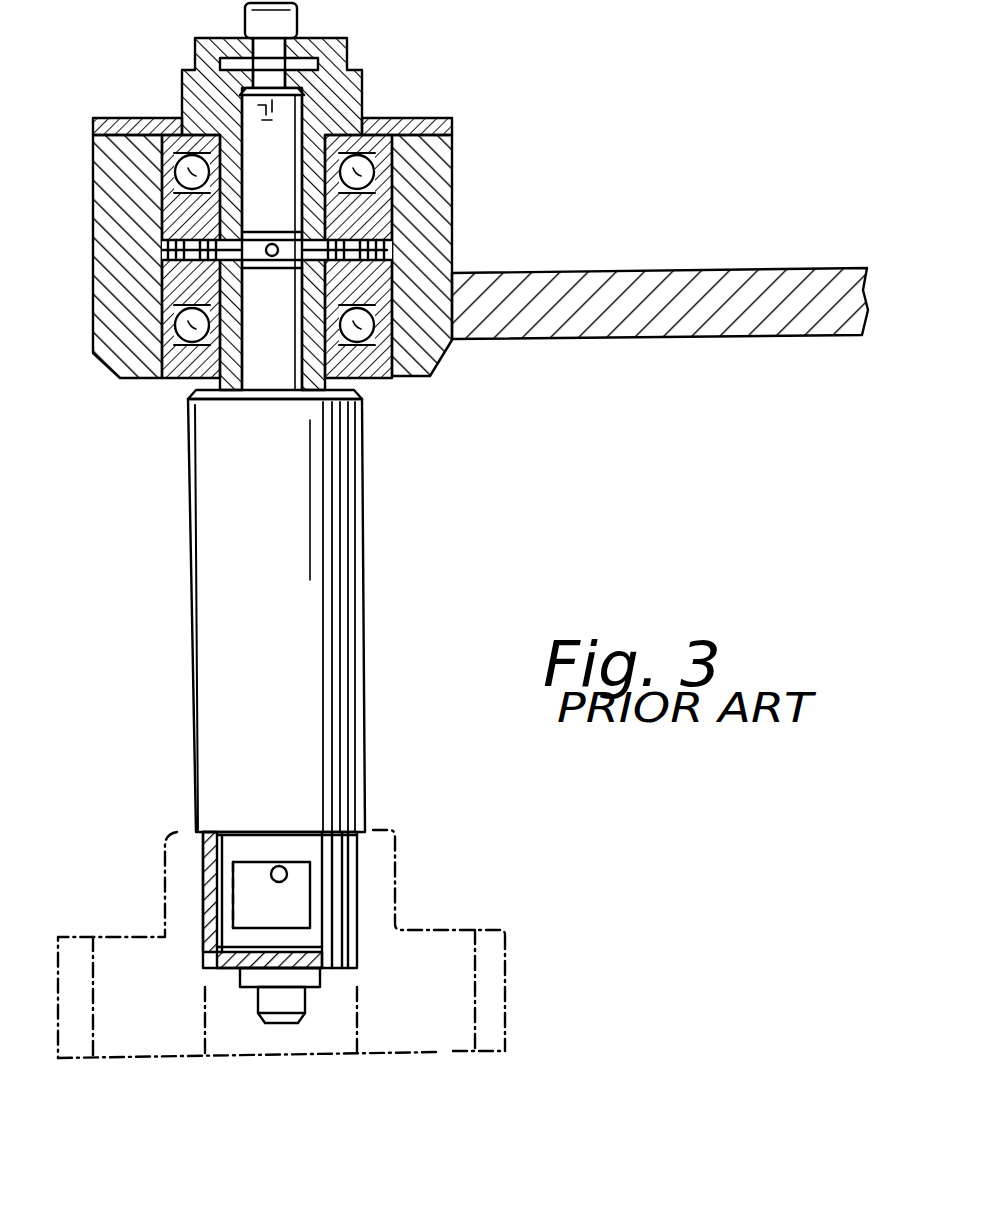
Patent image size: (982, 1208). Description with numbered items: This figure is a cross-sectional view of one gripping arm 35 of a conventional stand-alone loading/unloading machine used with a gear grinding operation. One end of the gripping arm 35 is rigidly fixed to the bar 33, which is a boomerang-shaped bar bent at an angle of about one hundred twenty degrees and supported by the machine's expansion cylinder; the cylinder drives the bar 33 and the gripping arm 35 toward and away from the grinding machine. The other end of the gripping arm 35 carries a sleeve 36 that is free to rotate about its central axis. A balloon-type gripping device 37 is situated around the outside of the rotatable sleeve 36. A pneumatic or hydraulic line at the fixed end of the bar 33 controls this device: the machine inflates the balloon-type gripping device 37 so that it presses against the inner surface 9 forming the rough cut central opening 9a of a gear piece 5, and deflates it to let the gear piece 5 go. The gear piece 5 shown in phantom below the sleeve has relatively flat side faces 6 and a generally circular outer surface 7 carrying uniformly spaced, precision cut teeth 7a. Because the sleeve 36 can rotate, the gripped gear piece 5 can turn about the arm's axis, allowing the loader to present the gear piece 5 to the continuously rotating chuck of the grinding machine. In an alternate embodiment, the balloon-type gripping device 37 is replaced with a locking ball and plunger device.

The bar 33 is at (665, 270).
The gripping arm 35 is at (182, 546).
The sleeve 36 is at (278, 523).
The balloon-type gripping device 37 is at (200, 880).
The side face 6 is at (118, 936).
The outer surface 7 is at (493, 953).
The teeth 7a is at (493, 1028).
The inner surface 9 is at (207, 1043).
The central opening 9a is at (262, 1046).
The gear piece 5 is at (390, 1042).